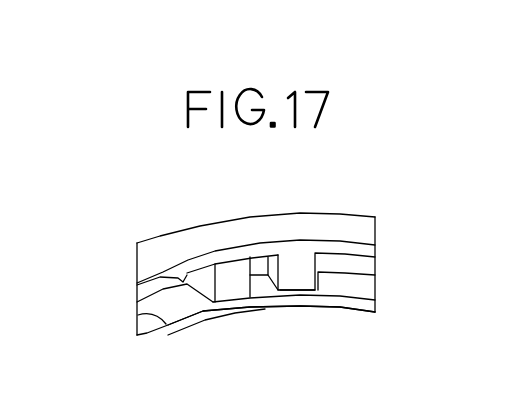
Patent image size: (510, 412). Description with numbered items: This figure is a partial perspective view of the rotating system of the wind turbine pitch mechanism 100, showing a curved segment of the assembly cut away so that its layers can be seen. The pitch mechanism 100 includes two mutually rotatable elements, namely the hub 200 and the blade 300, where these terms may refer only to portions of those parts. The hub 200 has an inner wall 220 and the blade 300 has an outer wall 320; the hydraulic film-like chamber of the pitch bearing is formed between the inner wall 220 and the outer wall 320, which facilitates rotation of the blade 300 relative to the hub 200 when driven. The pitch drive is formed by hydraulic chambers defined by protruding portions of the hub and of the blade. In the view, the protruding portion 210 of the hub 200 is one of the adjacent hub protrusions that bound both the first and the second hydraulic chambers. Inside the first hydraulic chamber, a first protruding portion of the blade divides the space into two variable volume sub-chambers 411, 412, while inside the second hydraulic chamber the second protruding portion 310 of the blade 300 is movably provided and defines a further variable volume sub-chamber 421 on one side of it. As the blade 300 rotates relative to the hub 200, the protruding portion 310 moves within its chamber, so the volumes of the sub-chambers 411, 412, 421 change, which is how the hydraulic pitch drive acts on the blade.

The pitch mechanism 100 is at (142, 228).
The hub 200 is at (357, 234).
The protruding portion of the hub 210 is at (301, 284).
The inner wall of the hub 220 is at (187, 287).
The blade 300 is at (357, 304).
The second protruding portion of the blade 310 is at (235, 297).
The outer wall of the blade 320 is at (167, 322).
The variable volume sub-chamber 411 is at (153, 295).
The variable volume sub-chamber 412 is at (267, 262).
The variable volume sub-chamber 421 is at (350, 265).